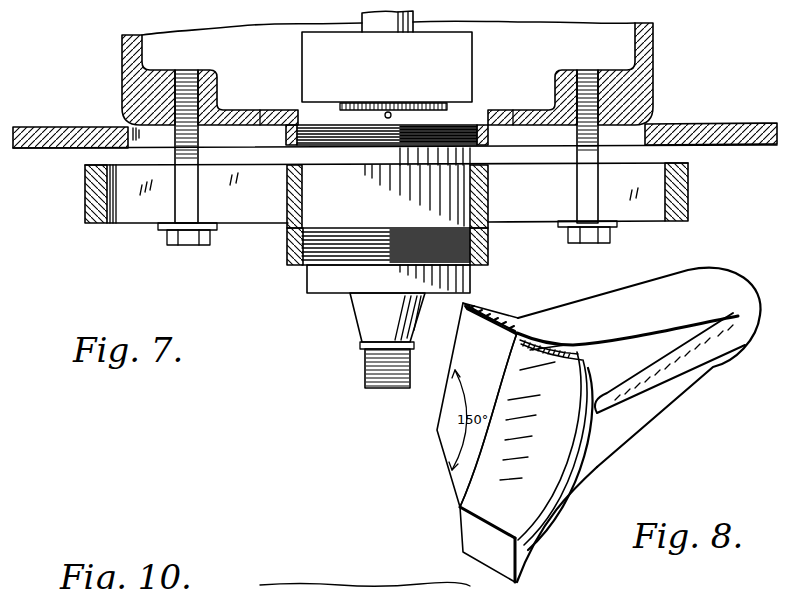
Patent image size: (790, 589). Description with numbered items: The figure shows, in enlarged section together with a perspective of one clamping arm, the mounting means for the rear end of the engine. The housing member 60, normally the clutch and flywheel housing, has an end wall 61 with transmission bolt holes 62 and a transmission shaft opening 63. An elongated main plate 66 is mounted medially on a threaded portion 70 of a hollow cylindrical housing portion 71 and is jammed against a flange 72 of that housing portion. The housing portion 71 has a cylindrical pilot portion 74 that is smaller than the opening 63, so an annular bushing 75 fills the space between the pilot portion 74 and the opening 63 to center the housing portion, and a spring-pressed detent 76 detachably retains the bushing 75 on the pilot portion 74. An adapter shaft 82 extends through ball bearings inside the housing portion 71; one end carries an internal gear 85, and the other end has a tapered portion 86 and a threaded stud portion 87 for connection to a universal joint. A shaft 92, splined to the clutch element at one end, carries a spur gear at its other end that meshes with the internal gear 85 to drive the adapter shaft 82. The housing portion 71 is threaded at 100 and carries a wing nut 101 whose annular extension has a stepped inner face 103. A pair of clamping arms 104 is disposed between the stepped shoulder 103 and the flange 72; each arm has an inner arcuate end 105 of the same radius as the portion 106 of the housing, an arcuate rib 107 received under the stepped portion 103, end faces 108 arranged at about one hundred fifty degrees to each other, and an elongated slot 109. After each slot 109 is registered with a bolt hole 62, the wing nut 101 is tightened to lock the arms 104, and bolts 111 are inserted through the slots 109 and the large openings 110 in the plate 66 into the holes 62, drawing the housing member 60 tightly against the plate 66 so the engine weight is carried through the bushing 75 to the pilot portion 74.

In FIG. 7, the housing member 60 is at (653, 42).
In FIG. 7, the end wall 61 is at (240, 110).
In FIG. 7, the bolt holes 62 is at (188, 75).
In FIG. 7, the opening 63 is at (513, 110).
In FIG. 7, the main plate 66 is at (748, 124).
In FIG. 7, the threaded portion 70 is at (325, 135).
In FIG. 7, the housing portion 71 is at (492, 215).
In FIG. 7, the flange 72 is at (490, 152).
In FIG. 7, the pilot portion 74 is at (448, 118).
In FIG. 7, the annular bushing 75 is at (275, 110).
In FIG. 7, the spring-pressed detent 76 is at (390, 111).
In FIG. 7, the adapter shaft 82 is at (350, 323).
In FIG. 7, the internal gear 85 is at (472, 45).
In FIG. 7, the tapered portion 86 is at (368, 340).
In FIG. 7, the threaded stud portion 87 is at (365, 382).
In FIG. 7, the shaft 92 is at (393, 22).
In FIG. 7, the threads 100 is at (333, 252).
In FIG. 7, the wing nut 101 is at (287, 257).
In FIG. 7, the stepped inner face 103 is at (287, 231).
In FIG. 7, the clamping arm 104 is at (85, 200).
In FIG. 8, the clamping arm 104 is at (658, 418).
In FIG. 8, the inner arcuate end 105 is at (548, 543).
In FIG. 7, the portion of the housing 106 is at (288, 195).
In FIG. 7, the arcuate rib 107 is at (298, 228).
In FIG. 8, the arcuate rib 107 is at (528, 528).
In FIG. 8, the end faces 108 is at (492, 328).
In FIG. 7, the elongated slot 109 is at (125, 222).
In FIG. 8, the elongated slot 109 is at (713, 352).
In FIG. 7, the opening 110 is at (145, 143).
In FIG. 7, the bolt 111 is at (188, 245).